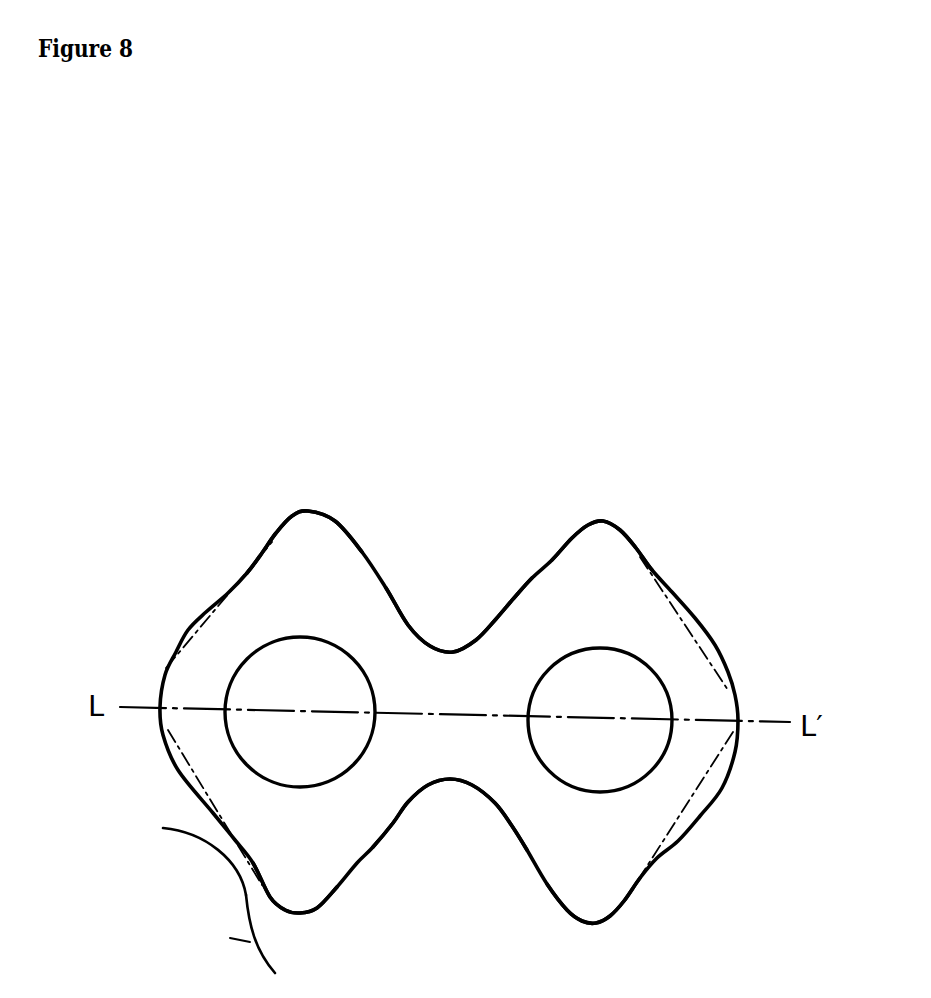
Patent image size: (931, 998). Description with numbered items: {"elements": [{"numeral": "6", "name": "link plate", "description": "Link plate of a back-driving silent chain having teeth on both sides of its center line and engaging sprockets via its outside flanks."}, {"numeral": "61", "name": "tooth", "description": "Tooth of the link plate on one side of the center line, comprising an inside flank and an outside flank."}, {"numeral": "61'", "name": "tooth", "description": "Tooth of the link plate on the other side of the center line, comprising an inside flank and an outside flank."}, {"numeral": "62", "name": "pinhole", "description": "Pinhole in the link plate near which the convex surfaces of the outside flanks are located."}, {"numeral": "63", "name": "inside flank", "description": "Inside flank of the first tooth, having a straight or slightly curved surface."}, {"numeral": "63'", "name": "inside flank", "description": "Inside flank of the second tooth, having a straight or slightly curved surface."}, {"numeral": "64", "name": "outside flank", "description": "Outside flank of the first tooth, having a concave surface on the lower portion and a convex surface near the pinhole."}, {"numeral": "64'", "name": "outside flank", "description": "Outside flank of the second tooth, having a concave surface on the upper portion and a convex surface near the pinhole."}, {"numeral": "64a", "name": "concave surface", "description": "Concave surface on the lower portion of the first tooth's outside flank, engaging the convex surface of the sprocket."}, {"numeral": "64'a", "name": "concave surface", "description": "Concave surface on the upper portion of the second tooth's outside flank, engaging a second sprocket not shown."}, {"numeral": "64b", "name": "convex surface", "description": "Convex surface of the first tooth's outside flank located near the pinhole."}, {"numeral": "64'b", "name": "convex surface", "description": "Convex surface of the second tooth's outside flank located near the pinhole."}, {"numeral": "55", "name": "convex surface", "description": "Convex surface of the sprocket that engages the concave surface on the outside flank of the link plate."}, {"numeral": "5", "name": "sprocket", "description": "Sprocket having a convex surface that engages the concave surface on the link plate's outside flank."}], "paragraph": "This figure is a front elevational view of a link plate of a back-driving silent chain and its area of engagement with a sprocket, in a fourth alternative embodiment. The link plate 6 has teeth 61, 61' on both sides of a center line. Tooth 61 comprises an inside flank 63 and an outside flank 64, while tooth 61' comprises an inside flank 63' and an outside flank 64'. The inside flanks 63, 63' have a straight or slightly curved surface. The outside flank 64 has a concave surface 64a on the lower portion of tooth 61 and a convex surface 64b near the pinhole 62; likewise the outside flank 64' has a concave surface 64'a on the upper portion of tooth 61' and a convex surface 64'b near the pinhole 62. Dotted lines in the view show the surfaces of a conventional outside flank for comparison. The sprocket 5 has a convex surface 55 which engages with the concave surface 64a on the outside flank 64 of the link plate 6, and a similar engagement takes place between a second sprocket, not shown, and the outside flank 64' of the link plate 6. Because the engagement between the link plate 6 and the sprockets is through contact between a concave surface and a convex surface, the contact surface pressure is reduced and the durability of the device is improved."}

The chain link plate 6 is at (463, 481).
The lower tooth-shaped projection 61 is at (446, 923).
The upper tooth-shaped projection 61' is at (449, 508).
The pin hole 62 is at (300, 638).
The lower recess between projections 63 is at (449, 856).
The upper recess between projections 63' is at (459, 583).
The lower outer edge portion 64 is at (788, 894).
The upper outer edge portion 64' is at (462, 546).
The straight edge portion 64a is at (255, 857).
The upper straight edge portion 64'a is at (456, 597).
The curved edge portion 64b is at (175, 771).
The upper curved edge portion 64'b is at (455, 609).
The sprocket tooth 55 is at (243, 902).
The sprocket 5 is at (250, 945).